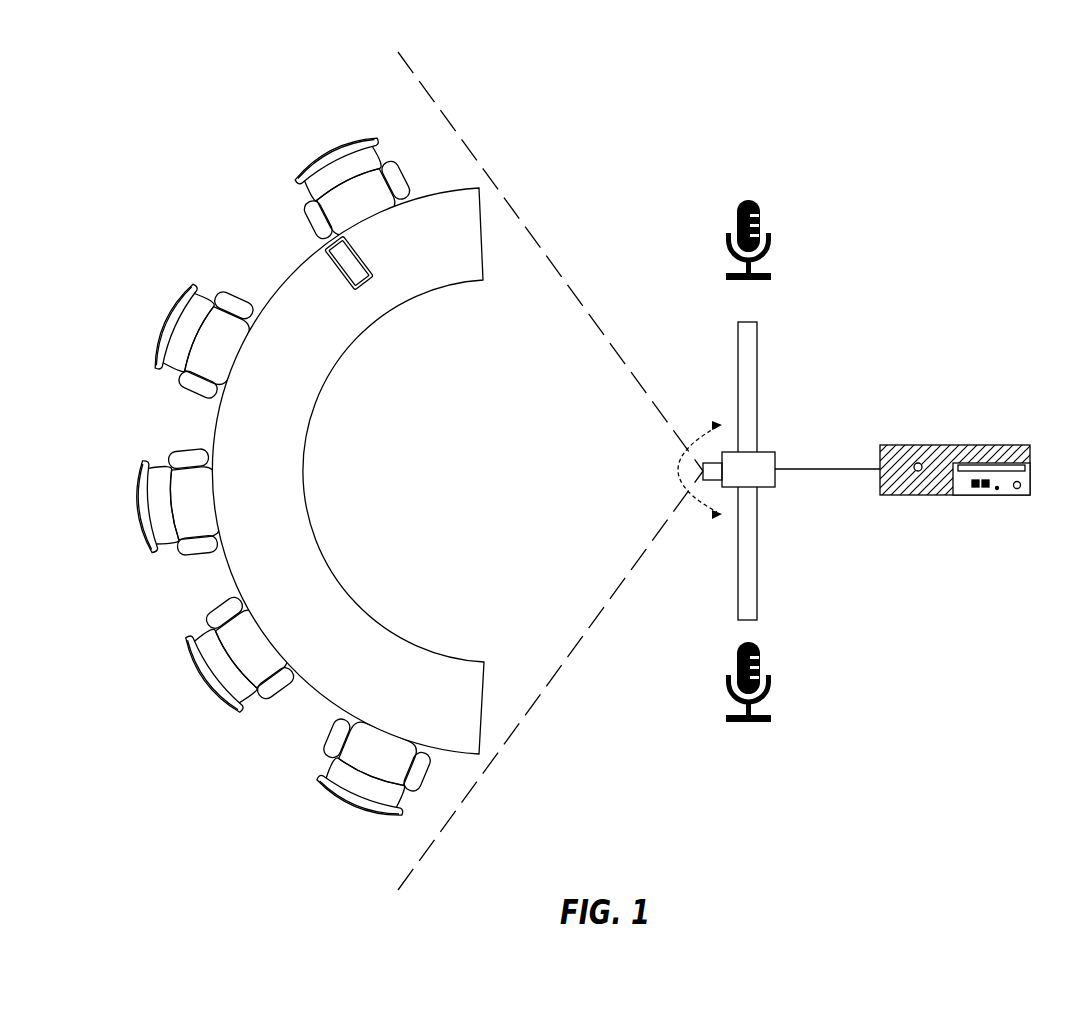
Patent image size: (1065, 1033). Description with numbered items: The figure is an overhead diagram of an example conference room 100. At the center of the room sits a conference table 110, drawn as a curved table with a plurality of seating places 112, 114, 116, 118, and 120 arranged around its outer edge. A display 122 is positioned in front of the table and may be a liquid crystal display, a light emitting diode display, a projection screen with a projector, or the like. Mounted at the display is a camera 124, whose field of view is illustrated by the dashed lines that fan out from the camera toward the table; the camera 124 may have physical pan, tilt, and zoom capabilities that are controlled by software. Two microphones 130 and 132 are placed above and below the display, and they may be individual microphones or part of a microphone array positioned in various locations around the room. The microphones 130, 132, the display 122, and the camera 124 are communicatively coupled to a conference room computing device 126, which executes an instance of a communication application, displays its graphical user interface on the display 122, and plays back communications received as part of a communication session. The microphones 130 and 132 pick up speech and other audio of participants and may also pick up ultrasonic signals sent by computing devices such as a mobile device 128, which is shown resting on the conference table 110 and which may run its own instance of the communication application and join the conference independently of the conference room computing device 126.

The conference room 100 is at (937, 76).
The conference table 110 is at (470, 187).
The seating place 112 is at (334, 146).
The seating place 114 is at (189, 287).
The seating place 116 is at (138, 460).
The seating place 118 is at (189, 636).
The seating place 120 is at (318, 772).
The display 122 is at (747, 322).
The camera 124 is at (768, 452).
The conference room computing device 126 is at (895, 445).
The mobile device 128 is at (329, 279).
The microphone 130 is at (750, 200).
The microphone 132 is at (748, 722).